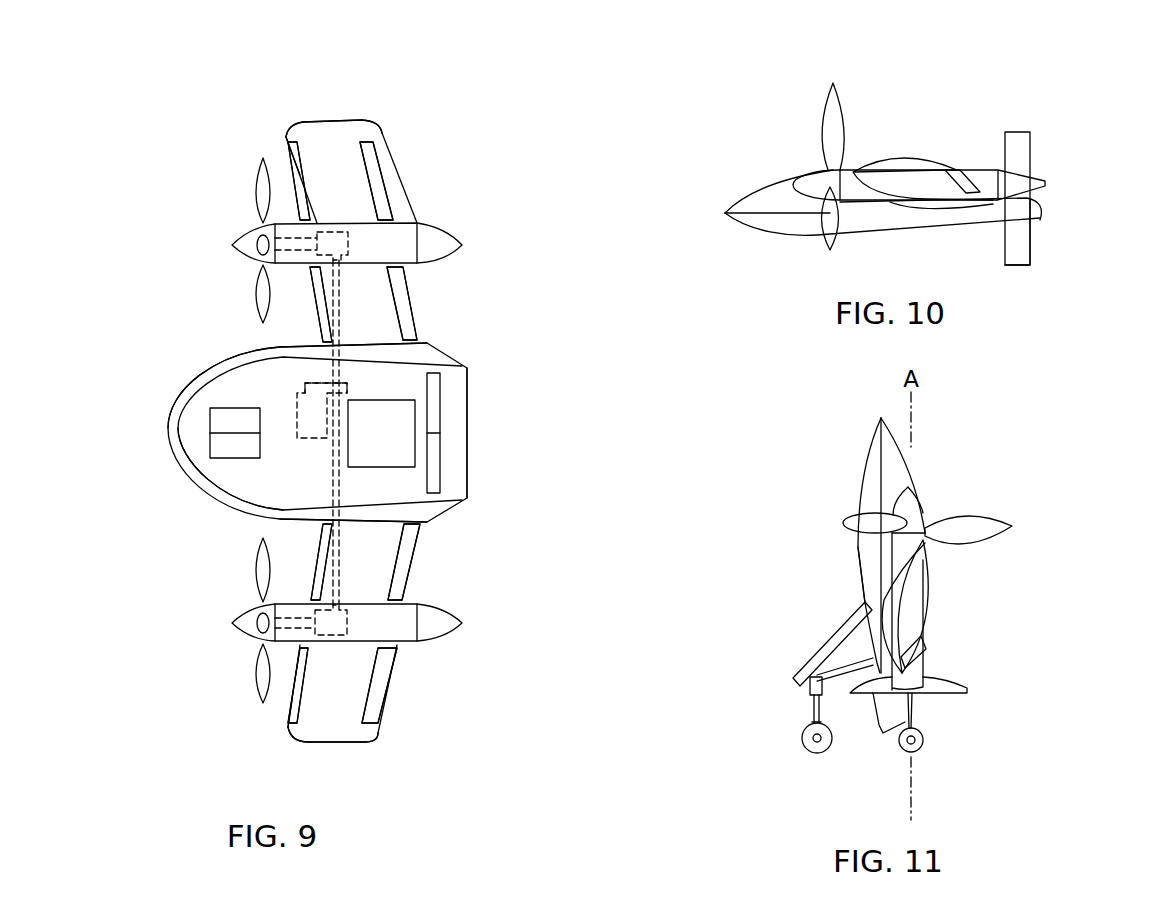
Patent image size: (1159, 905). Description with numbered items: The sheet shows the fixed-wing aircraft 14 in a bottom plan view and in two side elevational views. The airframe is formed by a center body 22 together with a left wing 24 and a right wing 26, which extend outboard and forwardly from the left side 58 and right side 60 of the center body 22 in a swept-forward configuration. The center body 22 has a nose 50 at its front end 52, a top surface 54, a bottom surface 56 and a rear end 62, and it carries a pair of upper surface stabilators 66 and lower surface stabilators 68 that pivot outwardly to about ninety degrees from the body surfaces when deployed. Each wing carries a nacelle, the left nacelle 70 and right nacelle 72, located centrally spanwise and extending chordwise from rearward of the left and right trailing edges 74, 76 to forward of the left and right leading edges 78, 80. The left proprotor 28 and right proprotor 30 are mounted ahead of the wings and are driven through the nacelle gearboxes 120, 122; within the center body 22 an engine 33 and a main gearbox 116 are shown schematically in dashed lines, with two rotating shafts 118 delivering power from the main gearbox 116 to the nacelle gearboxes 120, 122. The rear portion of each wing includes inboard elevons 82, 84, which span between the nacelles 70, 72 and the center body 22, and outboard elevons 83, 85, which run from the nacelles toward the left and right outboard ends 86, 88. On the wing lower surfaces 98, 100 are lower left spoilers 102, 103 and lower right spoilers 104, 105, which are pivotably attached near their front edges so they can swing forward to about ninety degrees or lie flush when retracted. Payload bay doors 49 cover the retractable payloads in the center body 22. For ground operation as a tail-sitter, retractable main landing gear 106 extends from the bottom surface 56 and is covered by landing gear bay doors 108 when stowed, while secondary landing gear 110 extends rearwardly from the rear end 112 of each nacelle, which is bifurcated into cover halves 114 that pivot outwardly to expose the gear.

In FIG. 9, the fixed-wing aircraft 14 is at (122, 603).
In FIG. 10, the fixed-wing aircraft 14 is at (676, 133).
In FIG. 11, the fixed-wing aircraft 14 is at (1035, 433).
In FIG. 9, the center body 22 is at (173, 437).
In FIG. 10, the center body 22 is at (740, 203).
In FIG. 11, the center body 22 is at (893, 442).
In FIG. 9, the left wing 24 is at (352, 121).
In FIG. 10, the left wing 24 is at (903, 160).
In FIG. 11, the left wing 24 is at (933, 580).
In FIG. 9, the right wing 26 is at (352, 743).
In FIG. 9, the left proprotor 28 is at (232, 245).
In FIG. 10, the left proprotor 28 is at (810, 183).
In FIG. 11, the left proprotor 28 is at (918, 505).
In FIG. 9, the right proprotor 30 is at (232, 623).
In FIG. 9, the engine 33 is at (298, 436).
In FIG. 9, the payload bay doors 49 is at (240, 411).
In FIG. 9, the nose 50 is at (177, 403).
In FIG. 9, the front end 52 is at (103, 406).
In FIG. 10, the front end 52 is at (675, 250).
In FIG. 11, the front end 52 is at (806, 405).
In FIG. 11, the top surface 54 is at (925, 540).
In FIG. 9, the bottom surface 56 is at (243, 473).
In FIG. 11, the bottom surface 56 is at (858, 562).
In FIG. 9, the left side 58 is at (247, 346).
In FIG. 9, the right side 60 is at (247, 516).
In FIG. 9, the rear end 62 is at (518, 433).
In FIG. 10, the rear end 62 is at (1099, 214).
In FIG. 11, the rear end 62 is at (868, 762).
In FIG. 10, the upper surface stabilators 66 is at (1025, 140).
In FIG. 9, the lower surface stabilators 68 is at (441, 392).
In FIG. 10, the lower surface stabilators 68 is at (1032, 255).
In FIG. 9, the left nacelle 70 is at (412, 643).
In FIG. 9, the right nacelle 72 is at (418, 225).
In FIG. 10, the right nacelle 72 is at (973, 170).
In FIG. 11, the right nacelle 72 is at (922, 652).
In FIG. 9, the left trailing edge 74 is at (380, 735).
In FIG. 9, the right trailing edge 76 is at (385, 133).
In FIG. 9, the left leading edge 78 is at (287, 146).
In FIG. 9, the right leading edge 80 is at (290, 722).
In FIG. 9, the left elevon 82 is at (412, 311).
In FIG. 9, the left elevon 83 is at (384, 171).
In FIG. 9, the right elevon 84 is at (412, 553).
In FIG. 9, the right elevon 85 is at (386, 695).
In FIG. 9, the left outboard end 86 is at (324, 121).
In FIG. 9, the right outboard end 88 is at (324, 743).
In FIG. 9, the left wing lower surface 98 is at (305, 128).
In FIG. 9, the right wing lower surface 100 is at (312, 742).
In FIG. 9, the lower left spoiler 102 is at (310, 292).
In FIG. 9, the lower left spoiler 103 is at (305, 186).
In FIG. 9, the lower right spoiler 104 is at (316, 574).
In FIG. 9, the lower right spoiler 105 is at (304, 685).
In FIG. 11, the main landing gear 106 is at (808, 707).
In FIG. 9, the landing gear bay doors 108 is at (381, 433).
In FIG. 11, the landing gear bay doors 108 is at (823, 650).
In FIG. 11, the secondary landing gear 110 is at (923, 705).
In FIG. 10, the rear end of nacelle 112 is at (1100, 160).
In FIG. 11, the rear end of nacelle 112 is at (1007, 772).
In FIG. 11, the cover halves 114 is at (962, 680).
In FIG. 9, the main gearbox 116 is at (349, 385).
In FIG. 9, the rotating shafts 118 is at (344, 308).
In FIG. 9, the left nacelle gearbox 120 is at (350, 243).
In FIG. 9, the right nacelle gearbox 122 is at (350, 624).